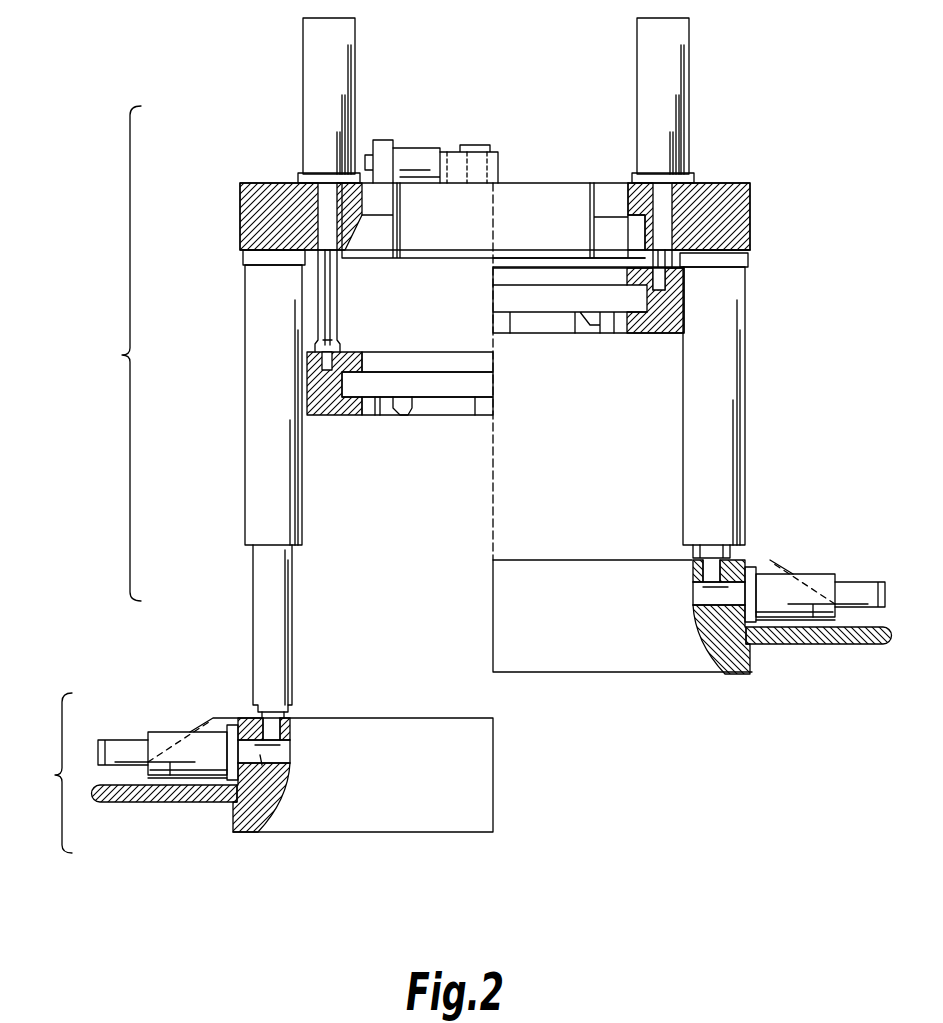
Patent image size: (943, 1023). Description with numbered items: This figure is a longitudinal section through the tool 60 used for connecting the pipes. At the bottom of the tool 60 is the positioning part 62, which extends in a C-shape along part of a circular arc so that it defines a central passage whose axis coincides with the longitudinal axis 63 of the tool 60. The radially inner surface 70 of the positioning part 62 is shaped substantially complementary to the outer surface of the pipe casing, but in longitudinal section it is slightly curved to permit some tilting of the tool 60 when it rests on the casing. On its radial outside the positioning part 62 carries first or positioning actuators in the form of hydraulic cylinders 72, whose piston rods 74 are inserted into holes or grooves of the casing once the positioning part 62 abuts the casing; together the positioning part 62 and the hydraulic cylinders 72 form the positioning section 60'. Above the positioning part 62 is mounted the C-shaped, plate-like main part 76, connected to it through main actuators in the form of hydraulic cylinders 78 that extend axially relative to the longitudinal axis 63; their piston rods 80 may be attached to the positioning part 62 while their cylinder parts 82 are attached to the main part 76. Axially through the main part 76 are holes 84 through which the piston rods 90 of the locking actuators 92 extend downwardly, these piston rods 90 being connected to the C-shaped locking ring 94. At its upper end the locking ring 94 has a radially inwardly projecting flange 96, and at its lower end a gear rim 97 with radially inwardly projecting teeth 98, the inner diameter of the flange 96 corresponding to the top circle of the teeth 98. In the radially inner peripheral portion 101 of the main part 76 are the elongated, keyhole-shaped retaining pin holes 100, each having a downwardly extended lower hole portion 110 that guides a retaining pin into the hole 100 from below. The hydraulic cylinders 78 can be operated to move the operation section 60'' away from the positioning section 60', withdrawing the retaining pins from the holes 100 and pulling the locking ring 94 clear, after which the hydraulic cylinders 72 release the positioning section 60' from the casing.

The tool 60 is at (755, 405).
The positioning section 60' is at (44, 773).
The operation section 60'' is at (110, 353).
The positioning part 62 is at (410, 815).
The longitudinal axis 63 is at (496, 782).
The radially inner surface 70 is at (270, 795).
The hydraulic cylinder 72 is at (190, 755).
The piston rod 74 is at (260, 755).
The main part 76 is at (262, 217).
The hydraulic cylinder 78 is at (239, 397).
The piston rod 80 is at (267, 590).
The cylinder part 82 is at (239, 397).
The hole 84 is at (303, 266).
The piston rod 90 is at (328, 330).
The locking actuator 92 is at (312, 152).
The locking ring 94 is at (440, 358).
The flange 96 is at (350, 352).
The gear rim 97 is at (380, 420).
The tooth 98 is at (398, 416).
The retaining pin hole 100 is at (615, 203).
The radially inner peripheral portion 101 is at (650, 158).
The lower hole portion 110 is at (615, 236).